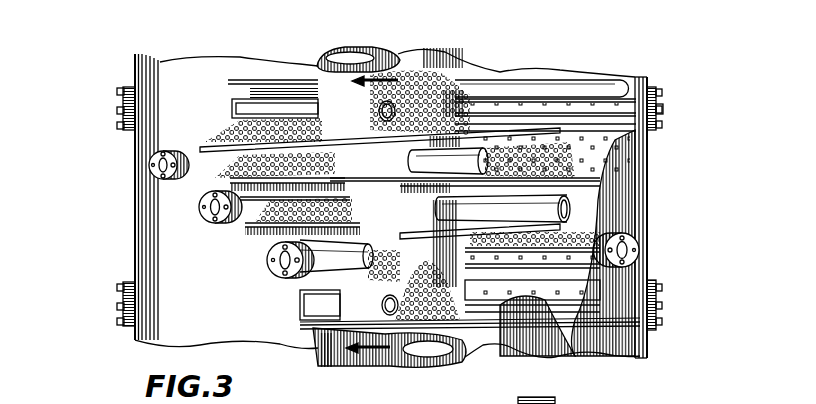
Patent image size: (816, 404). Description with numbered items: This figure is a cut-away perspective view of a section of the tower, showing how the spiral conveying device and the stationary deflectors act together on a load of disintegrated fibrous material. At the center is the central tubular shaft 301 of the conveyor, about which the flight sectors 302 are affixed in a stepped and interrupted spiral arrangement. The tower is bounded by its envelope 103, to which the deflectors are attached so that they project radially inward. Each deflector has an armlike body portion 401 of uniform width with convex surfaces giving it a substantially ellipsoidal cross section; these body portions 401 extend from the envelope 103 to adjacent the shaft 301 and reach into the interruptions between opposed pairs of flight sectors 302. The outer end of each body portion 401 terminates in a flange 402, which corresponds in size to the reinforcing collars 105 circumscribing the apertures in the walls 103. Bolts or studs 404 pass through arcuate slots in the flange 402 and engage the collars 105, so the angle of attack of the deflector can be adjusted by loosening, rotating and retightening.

The envelope 103 is at (645, 205).
The reinforcing collar 105 is at (133, 90).
The central tubular shaft 301 is at (388, 192).
The flight sector 302 is at (338, 140).
The armlike body portion 401 is at (283, 100).
The flange 402 is at (121, 104).
The bolts or studs 404 is at (663, 98).